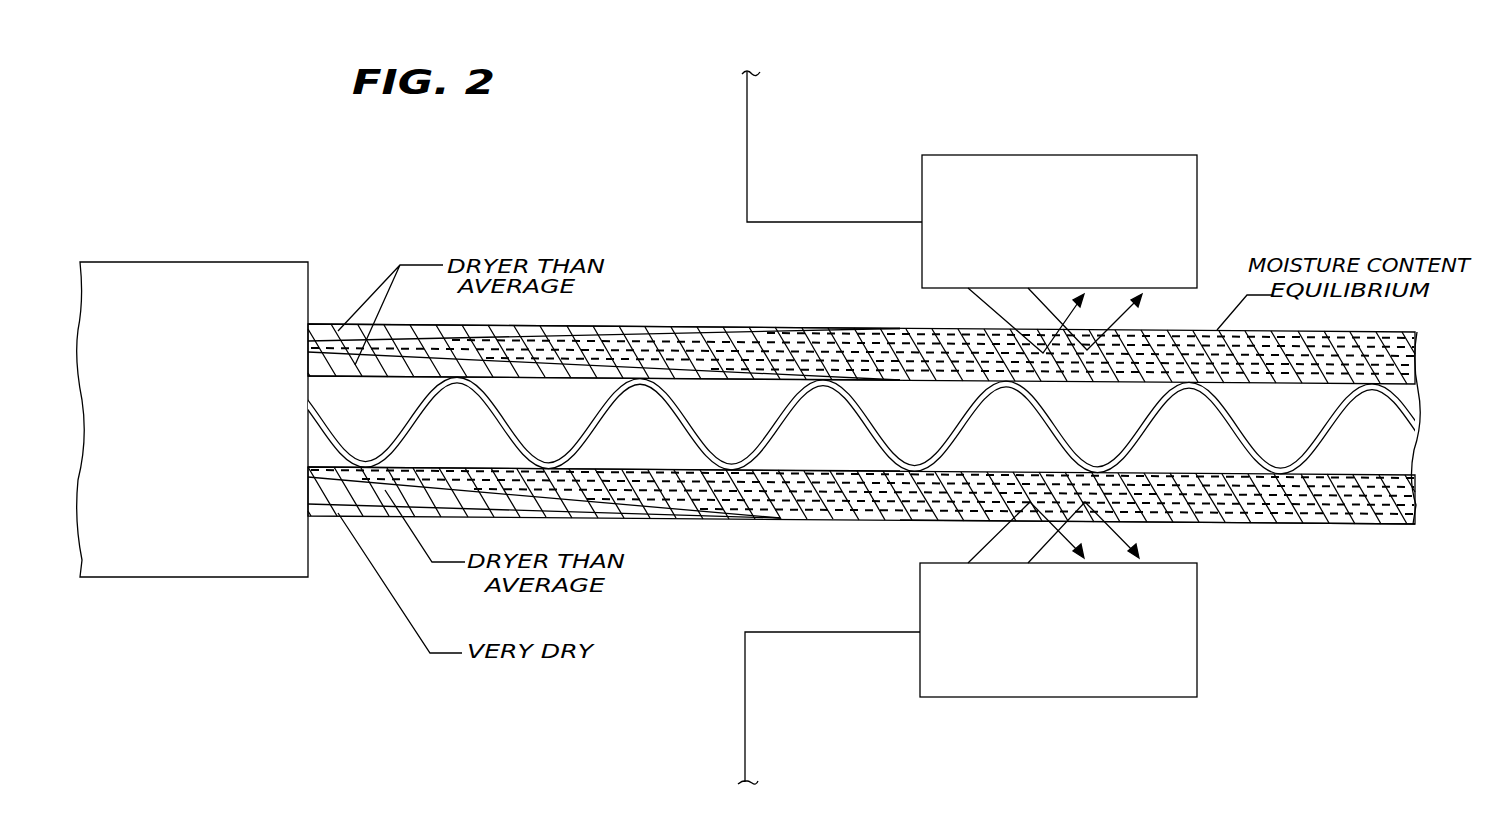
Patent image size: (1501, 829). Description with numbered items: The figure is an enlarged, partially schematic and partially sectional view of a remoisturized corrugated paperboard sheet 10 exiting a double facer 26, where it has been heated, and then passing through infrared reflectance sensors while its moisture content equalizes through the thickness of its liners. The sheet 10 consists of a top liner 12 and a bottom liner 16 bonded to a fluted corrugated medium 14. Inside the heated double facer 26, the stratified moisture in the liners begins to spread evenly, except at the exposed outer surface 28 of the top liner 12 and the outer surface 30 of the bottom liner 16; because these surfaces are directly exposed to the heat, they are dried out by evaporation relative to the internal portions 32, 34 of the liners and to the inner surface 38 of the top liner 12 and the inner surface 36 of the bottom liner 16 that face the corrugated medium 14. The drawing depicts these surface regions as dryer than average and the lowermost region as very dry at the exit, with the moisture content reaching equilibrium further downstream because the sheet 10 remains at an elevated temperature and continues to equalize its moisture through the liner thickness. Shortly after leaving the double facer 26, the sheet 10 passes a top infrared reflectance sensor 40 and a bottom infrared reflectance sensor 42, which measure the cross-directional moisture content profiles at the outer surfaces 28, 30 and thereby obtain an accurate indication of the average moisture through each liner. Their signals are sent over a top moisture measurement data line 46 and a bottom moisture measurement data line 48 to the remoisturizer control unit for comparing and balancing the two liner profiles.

The corrugated paperboard sheet 10 is at (869, 428).
The top liner 12 is at (861, 349).
The corrugated medium 14 is at (583, 432).
The bottom liner 16 is at (861, 498).
The double facer 26 is at (153, 261).
The outer surface of top liner 28 is at (897, 328).
The outer surface of bottom liner 30 is at (1268, 524).
The internal portion of top liner 32 is at (605, 330).
The internal portion of bottom liner 34 is at (727, 516).
The inner surface of bottom liner 36 is at (795, 470).
The inner surface of top liner 38 is at (873, 380).
The top infrared reflectance sensor 40 is at (1198, 174).
The bottom infrared reflectance sensor 42 is at (1198, 668).
The top moisture measurement data line 46 is at (756, 131).
The bottom moisture measurement data line 48 is at (812, 640).